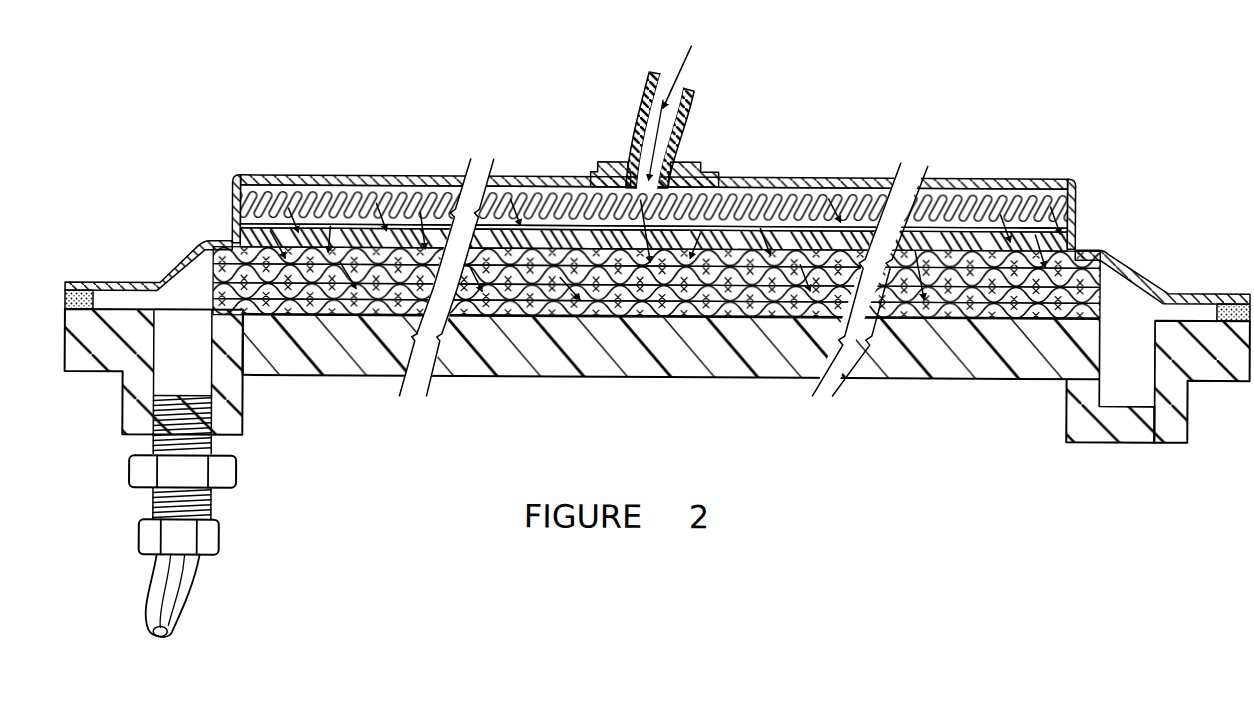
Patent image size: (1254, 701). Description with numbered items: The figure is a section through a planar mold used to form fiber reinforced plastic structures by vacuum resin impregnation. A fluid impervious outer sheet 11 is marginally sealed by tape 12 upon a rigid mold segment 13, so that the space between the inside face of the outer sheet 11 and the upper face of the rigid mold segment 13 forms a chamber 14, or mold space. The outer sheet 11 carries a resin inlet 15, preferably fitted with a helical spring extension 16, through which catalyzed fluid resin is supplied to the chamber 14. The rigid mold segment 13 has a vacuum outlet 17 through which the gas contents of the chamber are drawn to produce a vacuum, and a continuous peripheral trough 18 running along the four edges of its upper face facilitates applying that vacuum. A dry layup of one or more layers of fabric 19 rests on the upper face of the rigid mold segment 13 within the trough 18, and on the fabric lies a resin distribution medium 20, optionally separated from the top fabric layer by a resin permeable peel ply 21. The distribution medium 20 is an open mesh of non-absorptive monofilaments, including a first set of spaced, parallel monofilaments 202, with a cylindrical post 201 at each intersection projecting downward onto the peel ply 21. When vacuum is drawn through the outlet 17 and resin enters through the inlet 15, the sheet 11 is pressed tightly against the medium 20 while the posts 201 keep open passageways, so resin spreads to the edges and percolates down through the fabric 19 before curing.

The fluid impervious outer sheet 11 is at (173, 275).
The tape 12 is at (62, 290).
The rigid mold segment 13 is at (78, 372).
The chamber 14 is at (188, 292).
The resin inlet 15 is at (690, 104).
The helical spring extension 16 is at (1037, 210).
The vacuum outlet 17 is at (212, 500).
The continuous peripheral trough 18 is at (188, 378).
The fabric 19 is at (563, 320).
The resin distribution medium 20 is at (657, 207).
The post 201 is at (246, 226).
The first set of monofilaments 202 is at (352, 230).
The resin permeable peel ply 21 is at (750, 248).